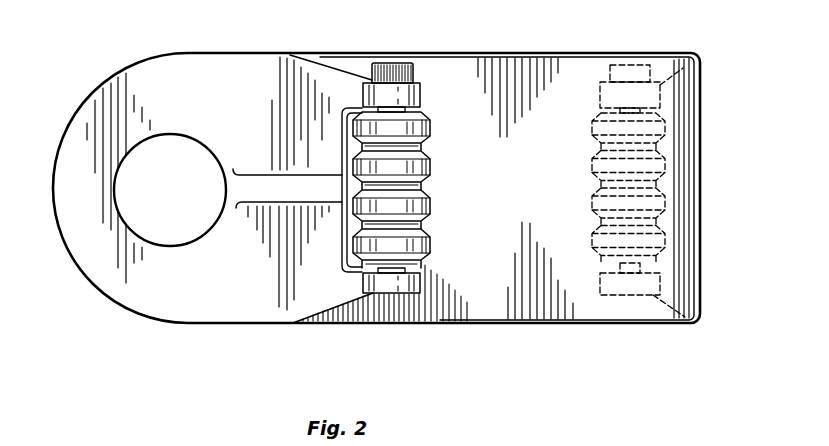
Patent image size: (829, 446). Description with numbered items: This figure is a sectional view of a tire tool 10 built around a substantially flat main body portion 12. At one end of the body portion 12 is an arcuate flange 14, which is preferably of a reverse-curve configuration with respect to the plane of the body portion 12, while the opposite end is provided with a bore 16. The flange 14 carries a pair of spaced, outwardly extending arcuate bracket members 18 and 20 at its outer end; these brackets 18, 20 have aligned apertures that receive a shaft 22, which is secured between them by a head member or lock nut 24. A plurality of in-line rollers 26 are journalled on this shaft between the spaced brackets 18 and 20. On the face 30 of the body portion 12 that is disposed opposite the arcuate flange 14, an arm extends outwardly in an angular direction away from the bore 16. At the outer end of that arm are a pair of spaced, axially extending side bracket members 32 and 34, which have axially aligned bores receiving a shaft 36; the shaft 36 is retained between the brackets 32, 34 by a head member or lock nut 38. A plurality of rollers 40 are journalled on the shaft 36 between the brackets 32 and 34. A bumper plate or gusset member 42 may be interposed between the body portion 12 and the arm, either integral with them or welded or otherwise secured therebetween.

The tire tool 10 is at (140, 345).
The main body portion 12 is at (447, 63).
The arcuate flange 14 is at (693, 128).
The bore 16 is at (115, 187).
The arcuate bracket member 18 is at (623, 296).
The arcuate bracket member 20 is at (652, 98).
The shaft 22 is at (614, 114).
The lock nut 24 is at (632, 66).
The in-line rollers 26 is at (592, 207).
The face 30 is at (508, 200).
The side bracket member 32 is at (372, 292).
The side bracket member 34 is at (420, 95).
The shaft 36 is at (420, 269).
The lock nut 38 is at (391, 64).
The rollers 40 is at (430, 166).
The bumper plate 42 is at (259, 176).